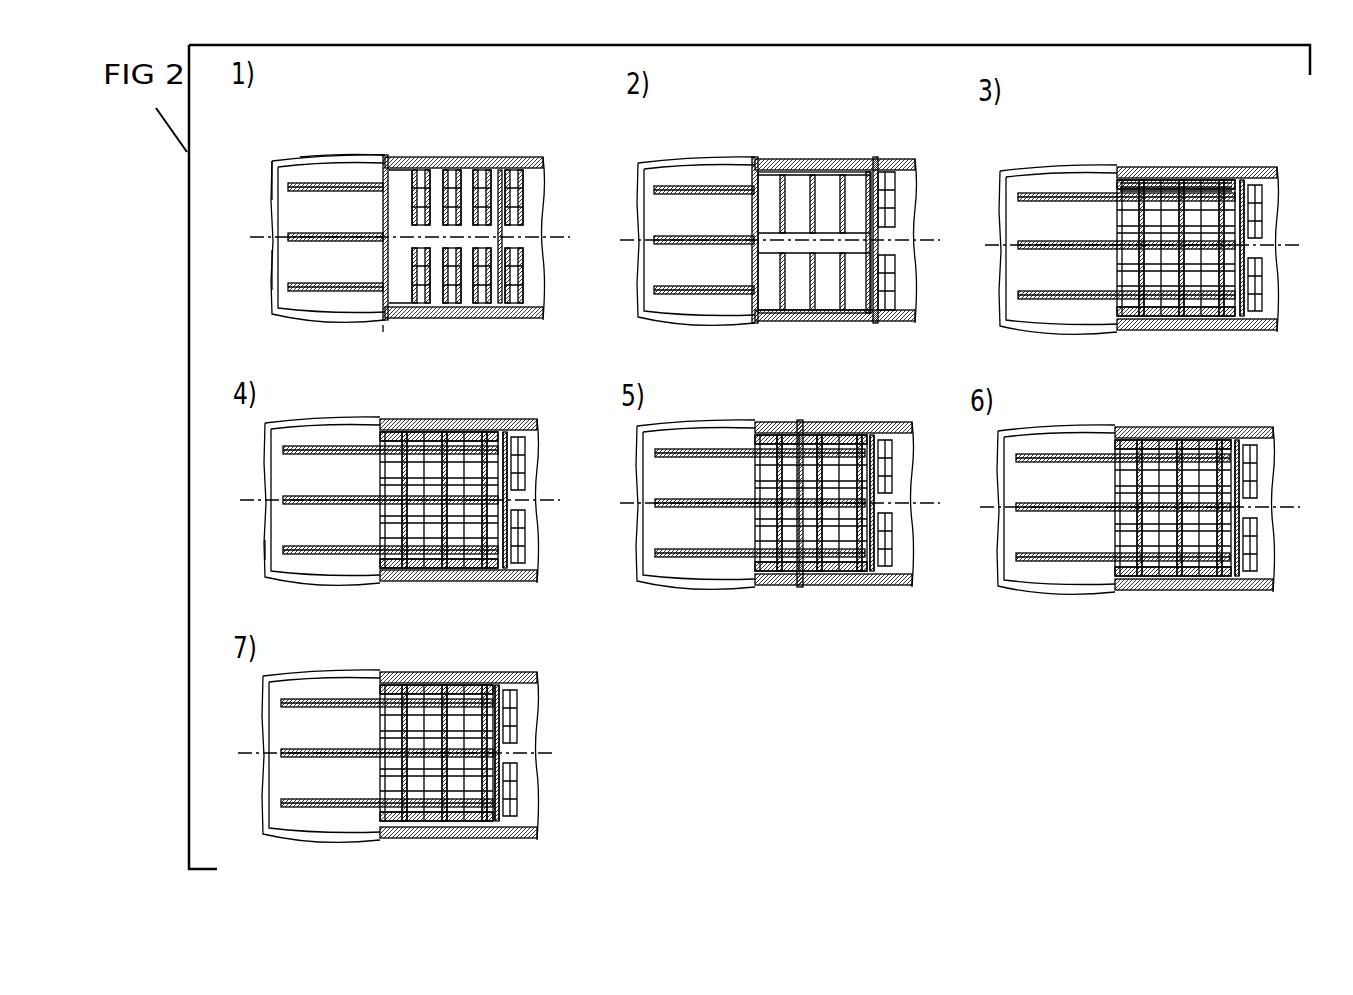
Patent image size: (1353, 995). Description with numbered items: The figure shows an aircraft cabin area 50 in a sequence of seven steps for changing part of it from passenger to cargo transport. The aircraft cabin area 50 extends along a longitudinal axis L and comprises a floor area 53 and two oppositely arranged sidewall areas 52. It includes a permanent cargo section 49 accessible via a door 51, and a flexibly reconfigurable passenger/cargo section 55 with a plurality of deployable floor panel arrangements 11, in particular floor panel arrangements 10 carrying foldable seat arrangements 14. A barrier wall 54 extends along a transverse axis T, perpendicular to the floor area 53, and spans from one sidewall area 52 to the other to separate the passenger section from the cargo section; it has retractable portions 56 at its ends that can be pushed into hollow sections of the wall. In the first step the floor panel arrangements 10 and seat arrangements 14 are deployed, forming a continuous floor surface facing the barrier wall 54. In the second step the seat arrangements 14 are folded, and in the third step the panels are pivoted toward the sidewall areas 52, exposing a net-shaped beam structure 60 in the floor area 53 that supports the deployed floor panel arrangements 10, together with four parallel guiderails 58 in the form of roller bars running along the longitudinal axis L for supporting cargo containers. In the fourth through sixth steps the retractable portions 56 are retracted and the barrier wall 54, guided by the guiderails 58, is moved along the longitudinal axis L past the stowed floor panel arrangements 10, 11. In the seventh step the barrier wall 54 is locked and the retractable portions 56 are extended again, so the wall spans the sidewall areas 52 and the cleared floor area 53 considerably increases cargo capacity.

The floor panel arrangement 10 is at (430, 170).
The deployable floor panel arrangement 11 is at (402, 167).
The foldable seat arrangement 14 is at (795, 143).
The permanent cargo section 49 is at (258, 256).
The aircraft cabin area 50 is at (344, 134).
The door 51 is at (303, 152).
The sidewall area 52 is at (537, 155).
The floor area 53 is at (271, 160).
The barrier wall 54 is at (384, 186).
The flexibly reconfigurable passenger/cargo section 55 is at (472, 130).
The retractable portion 56 is at (384, 158).
The guiderail 58 is at (1165, 174).
The beam structure 60 is at (1140, 172).
The longitudinal axis L is at (250, 238).
The transverse axis T is at (380, 338).